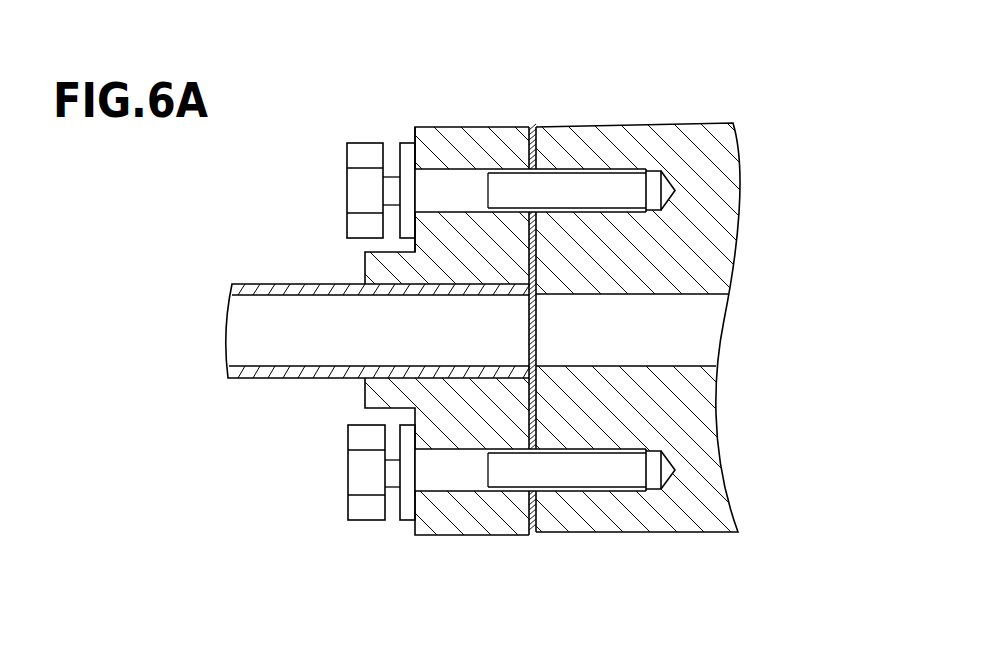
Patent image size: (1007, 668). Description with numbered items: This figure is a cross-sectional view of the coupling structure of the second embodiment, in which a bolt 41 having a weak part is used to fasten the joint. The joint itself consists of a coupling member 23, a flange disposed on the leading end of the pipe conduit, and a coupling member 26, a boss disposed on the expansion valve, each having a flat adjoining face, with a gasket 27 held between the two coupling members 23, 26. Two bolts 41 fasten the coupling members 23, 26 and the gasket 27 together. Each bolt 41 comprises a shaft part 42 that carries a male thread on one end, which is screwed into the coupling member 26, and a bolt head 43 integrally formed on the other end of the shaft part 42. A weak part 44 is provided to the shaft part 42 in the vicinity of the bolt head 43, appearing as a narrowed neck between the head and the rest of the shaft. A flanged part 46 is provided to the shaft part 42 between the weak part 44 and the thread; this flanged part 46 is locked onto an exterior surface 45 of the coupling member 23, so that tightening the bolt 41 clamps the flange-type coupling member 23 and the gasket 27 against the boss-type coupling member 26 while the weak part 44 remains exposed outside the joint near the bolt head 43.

The coupling member 23 is at (472, 545).
The coupling member 26 is at (680, 546).
The gasket 27 is at (540, 120).
The bolt 41 is at (442, 324).
The shaft part 42 is at (512, 169).
The bolt head 43 is at (357, 142).
The weak part 44 is at (390, 177).
The exterior surface 45 is at (414, 137).
The flanged part 46 is at (405, 142).